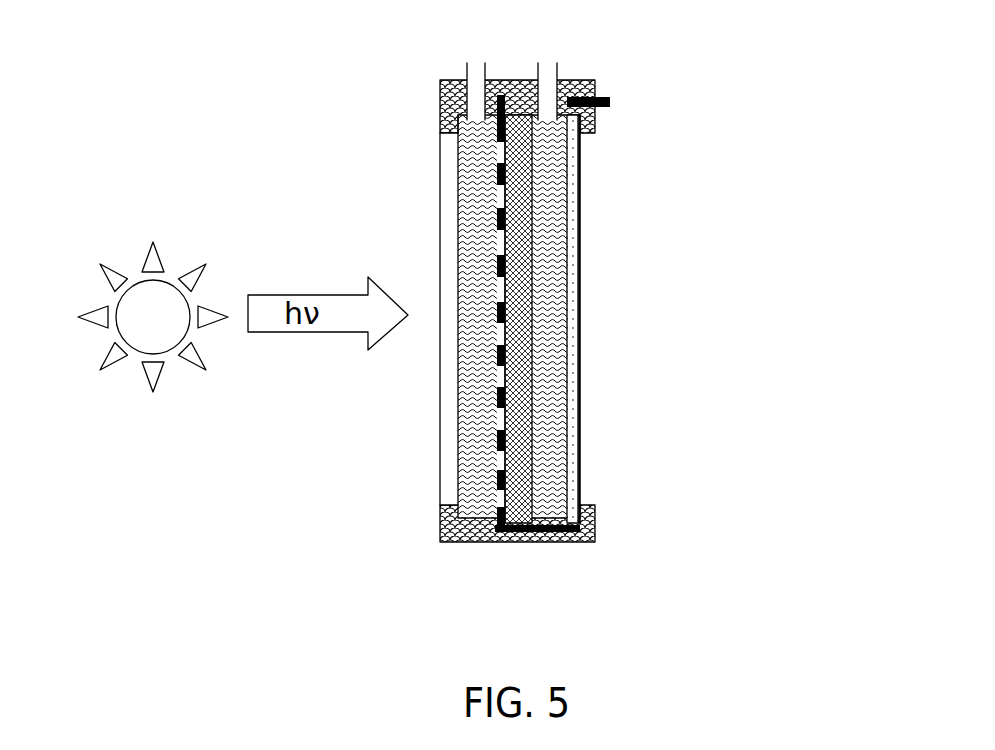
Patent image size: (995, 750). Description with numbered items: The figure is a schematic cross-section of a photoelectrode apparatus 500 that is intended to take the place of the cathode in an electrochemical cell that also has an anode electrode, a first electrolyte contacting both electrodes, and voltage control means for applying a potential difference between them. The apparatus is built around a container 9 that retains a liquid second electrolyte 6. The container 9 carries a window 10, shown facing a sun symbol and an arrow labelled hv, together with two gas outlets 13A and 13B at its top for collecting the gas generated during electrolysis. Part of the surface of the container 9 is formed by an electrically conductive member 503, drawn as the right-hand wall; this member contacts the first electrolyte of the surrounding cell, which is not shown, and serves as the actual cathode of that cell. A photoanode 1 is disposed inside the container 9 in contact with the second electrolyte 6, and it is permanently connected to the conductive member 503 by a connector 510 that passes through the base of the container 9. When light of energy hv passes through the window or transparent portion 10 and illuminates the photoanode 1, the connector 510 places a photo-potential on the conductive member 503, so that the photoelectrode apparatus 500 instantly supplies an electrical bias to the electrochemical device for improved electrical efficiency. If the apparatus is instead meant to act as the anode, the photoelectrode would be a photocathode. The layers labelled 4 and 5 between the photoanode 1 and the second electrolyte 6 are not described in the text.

The photoelectrode apparatus 500 is at (547, 329).
The photoanode 1 is at (403, 309).
The anode electrolyte 4 is at (396, 316).
The ion exchange membrane 5 is at (423, 359).
The second electrolyte 6 is at (503, 379).
The container 9 is at (582, 311).
The window 10 is at (370, 319).
The gas outlet 13A is at (381, 68).
The gas outlet 13B is at (641, 68).
The electrically conductive member 503 is at (672, 319).
The connector 510 is at (635, 557).